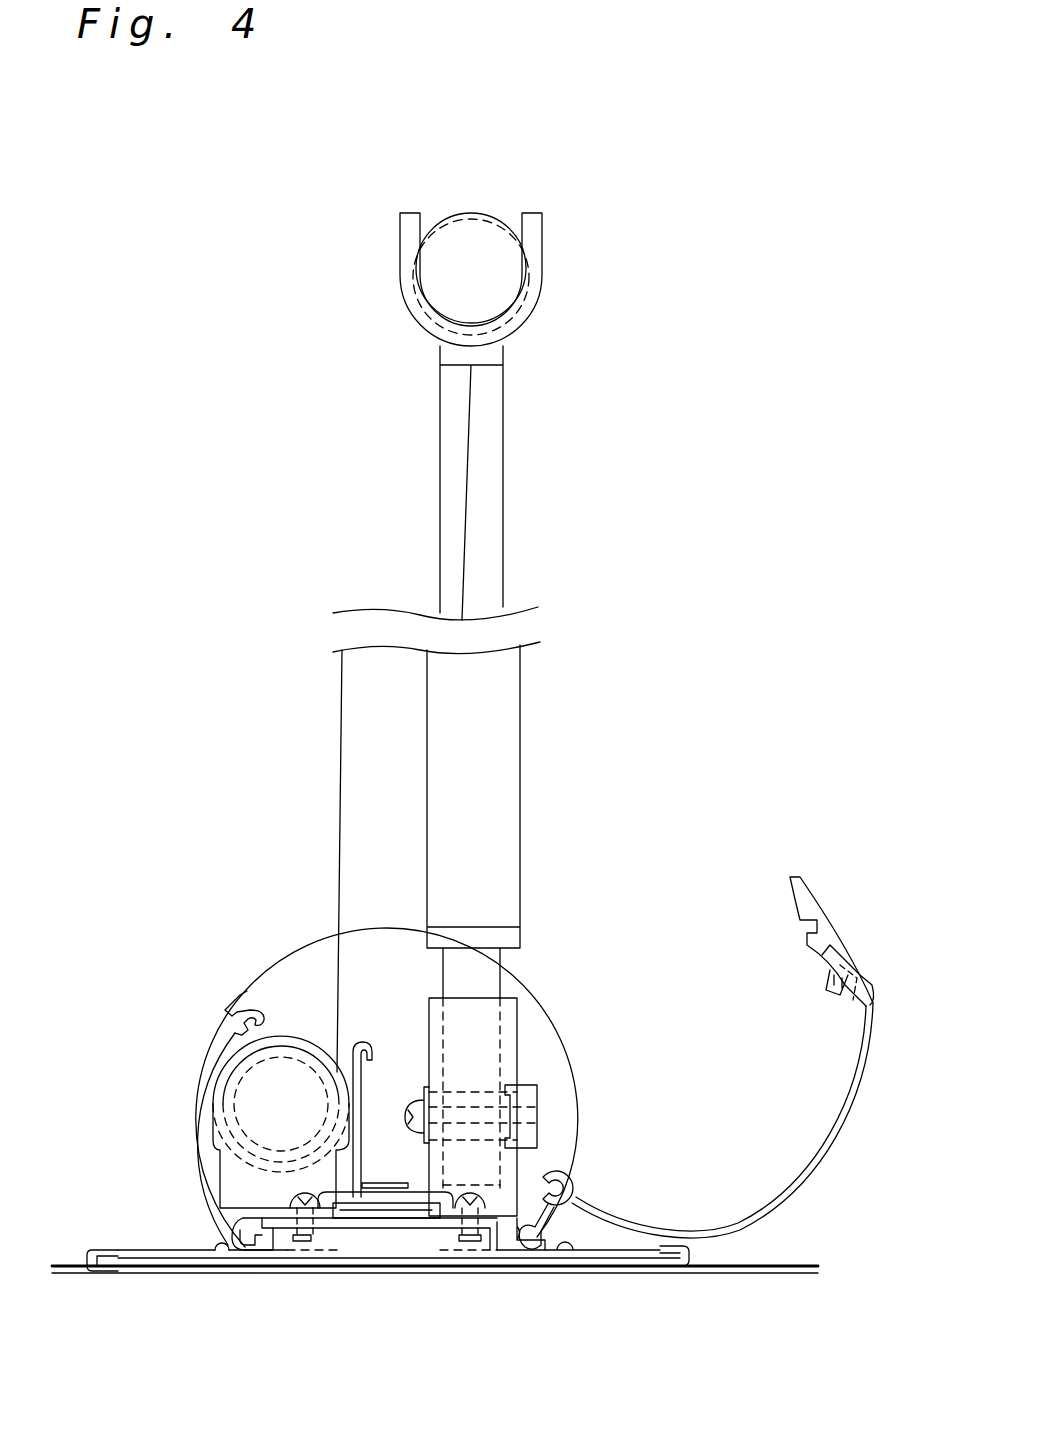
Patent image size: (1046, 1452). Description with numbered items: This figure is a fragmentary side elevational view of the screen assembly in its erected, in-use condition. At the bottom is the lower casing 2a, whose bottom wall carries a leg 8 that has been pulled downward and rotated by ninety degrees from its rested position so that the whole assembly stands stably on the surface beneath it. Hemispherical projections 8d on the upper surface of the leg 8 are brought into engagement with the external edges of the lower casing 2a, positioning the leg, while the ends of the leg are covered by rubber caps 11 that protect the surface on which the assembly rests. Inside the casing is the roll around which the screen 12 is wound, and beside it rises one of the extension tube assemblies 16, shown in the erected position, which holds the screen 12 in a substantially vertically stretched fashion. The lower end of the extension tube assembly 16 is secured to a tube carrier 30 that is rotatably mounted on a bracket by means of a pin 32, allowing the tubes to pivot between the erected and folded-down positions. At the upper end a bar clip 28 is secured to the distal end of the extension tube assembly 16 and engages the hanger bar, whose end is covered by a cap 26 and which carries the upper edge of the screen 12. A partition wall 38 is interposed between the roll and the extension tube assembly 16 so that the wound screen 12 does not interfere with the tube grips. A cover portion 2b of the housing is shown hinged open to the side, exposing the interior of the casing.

The lower casing 2a is at (193, 1125).
The right cover arm 2b is at (800, 1183).
The leg 8 is at (405, 1258).
The hemispherical projection 8d is at (233, 1245).
The rubber cap 11 is at (700, 1268).
The screen 12 is at (465, 532).
The extension tube assembly 16 is at (520, 738).
The cap 26 is at (482, 213).
The bar clip 28 is at (547, 232).
The tube carrier 30 is at (510, 1017).
The pin 32 is at (540, 1113).
The partition wall 38 is at (357, 1046).